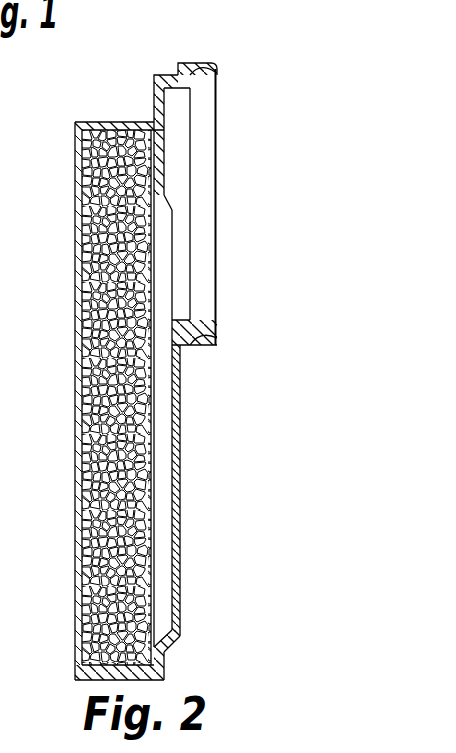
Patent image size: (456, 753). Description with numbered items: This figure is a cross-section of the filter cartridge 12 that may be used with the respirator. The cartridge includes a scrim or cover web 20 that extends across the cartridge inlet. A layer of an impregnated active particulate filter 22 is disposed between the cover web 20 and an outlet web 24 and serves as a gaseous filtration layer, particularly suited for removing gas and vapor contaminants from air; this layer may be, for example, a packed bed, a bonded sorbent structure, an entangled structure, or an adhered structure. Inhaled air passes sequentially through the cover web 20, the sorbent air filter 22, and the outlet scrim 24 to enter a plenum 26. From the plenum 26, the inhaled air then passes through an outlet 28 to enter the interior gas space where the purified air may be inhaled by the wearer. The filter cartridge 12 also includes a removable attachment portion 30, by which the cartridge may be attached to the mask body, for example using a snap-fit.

The filter cartridge 12 is at (244, 79).
The cover web 20 is at (87, 240).
The impregnated active particulate filter 22 is at (122, 122).
The outlet web 24 is at (155, 465).
The plenum 26 is at (162, 392).
The outlet 28 is at (208, 196).
The removable attachment portion 30 is at (204, 68).